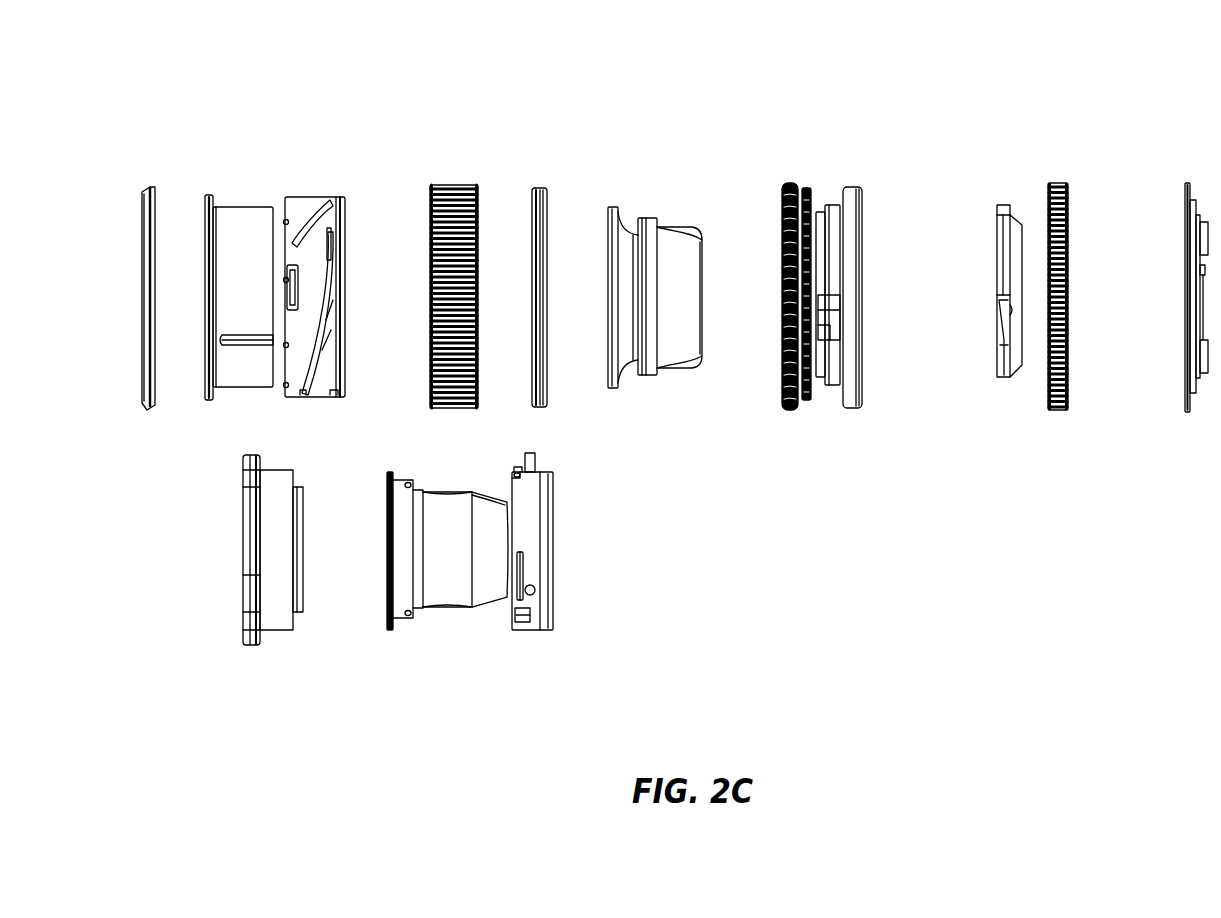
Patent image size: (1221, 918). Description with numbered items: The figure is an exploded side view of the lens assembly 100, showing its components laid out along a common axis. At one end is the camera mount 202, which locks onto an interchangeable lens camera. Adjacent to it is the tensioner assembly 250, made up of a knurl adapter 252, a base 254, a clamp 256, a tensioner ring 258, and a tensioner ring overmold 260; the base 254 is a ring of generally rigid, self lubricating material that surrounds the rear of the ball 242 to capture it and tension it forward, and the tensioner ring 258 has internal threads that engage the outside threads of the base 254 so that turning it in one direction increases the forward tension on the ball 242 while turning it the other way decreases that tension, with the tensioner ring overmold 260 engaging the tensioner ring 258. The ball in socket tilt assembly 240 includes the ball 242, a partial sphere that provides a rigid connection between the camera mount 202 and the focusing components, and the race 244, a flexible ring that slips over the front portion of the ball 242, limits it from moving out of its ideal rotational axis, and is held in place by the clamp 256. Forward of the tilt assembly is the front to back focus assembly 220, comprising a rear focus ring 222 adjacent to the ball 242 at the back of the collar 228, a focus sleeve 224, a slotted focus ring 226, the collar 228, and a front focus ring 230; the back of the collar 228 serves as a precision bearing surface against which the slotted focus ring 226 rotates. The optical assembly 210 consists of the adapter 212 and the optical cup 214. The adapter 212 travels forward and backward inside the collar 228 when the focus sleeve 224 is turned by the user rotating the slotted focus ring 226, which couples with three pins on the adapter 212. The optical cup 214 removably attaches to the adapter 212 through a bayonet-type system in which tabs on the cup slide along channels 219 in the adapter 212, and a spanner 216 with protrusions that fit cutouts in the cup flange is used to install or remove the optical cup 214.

The lens assembly 100 is at (980, 598).
The camera mount 202 is at (1188, 187).
The optical assembly 210 is at (361, 679).
The adapter 212 is at (548, 556).
The optical cup 214 is at (454, 600).
The spanner 216 is at (278, 628).
The channels 219 is at (548, 485).
The focus assembly 220 is at (257, 98).
The rear focus ring 222 is at (538, 188).
The focus sleeve 224 is at (455, 187).
The slotted focus ring 226 is at (330, 200).
The collar 228 is at (237, 213).
The front focus ring 230 is at (144, 189).
The ball in socket tilt assembly 240 is at (688, 98).
The ball 242 is at (692, 236).
The race 244 is at (648, 222).
The tensioner assembly 250 is at (980, 98).
The knurl adapter 252 is at (1057, 185).
The base 254 is at (1001, 205).
The clamp 256 is at (852, 192).
The tensioner ring 258 is at (806, 192).
The tensioner ring overmold 260 is at (790, 185).